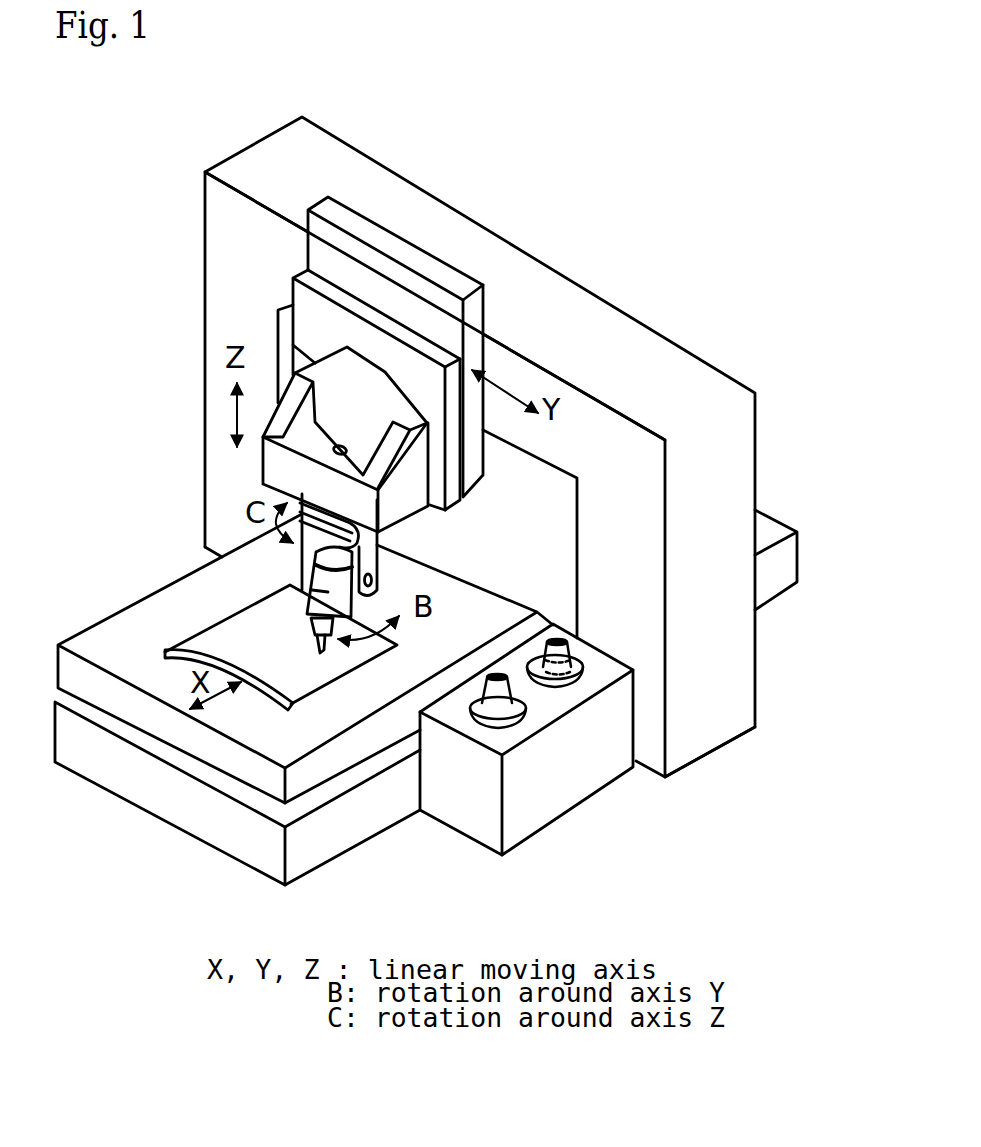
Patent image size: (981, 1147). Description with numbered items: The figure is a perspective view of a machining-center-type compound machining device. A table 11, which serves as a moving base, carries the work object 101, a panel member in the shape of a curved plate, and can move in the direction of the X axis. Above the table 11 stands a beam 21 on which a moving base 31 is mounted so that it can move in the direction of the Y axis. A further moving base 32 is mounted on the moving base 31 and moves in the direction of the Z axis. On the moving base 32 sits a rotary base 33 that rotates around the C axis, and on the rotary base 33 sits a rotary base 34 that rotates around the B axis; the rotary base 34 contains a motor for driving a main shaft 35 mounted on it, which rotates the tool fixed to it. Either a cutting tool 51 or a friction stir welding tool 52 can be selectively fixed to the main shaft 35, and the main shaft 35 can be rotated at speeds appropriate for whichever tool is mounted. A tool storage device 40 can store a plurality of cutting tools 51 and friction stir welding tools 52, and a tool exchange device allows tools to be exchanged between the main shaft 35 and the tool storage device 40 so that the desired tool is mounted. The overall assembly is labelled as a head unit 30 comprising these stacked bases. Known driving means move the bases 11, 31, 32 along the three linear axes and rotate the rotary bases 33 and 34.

The table 11 is at (192, 597).
The beam 21 is at (648, 350).
The spindle head unit 30 is at (148, 310).
The moving base 31 is at (478, 315).
The moving base 32 is at (290, 340).
The rotary base 33 is at (380, 534).
The rotary base 34 is at (303, 563).
The main shaft 35 is at (312, 622).
The tool storage device 40 is at (450, 803).
The cutting tool 51 is at (565, 675).
The friction stir welding tool 52 is at (497, 688).
The work object 101 is at (222, 640).